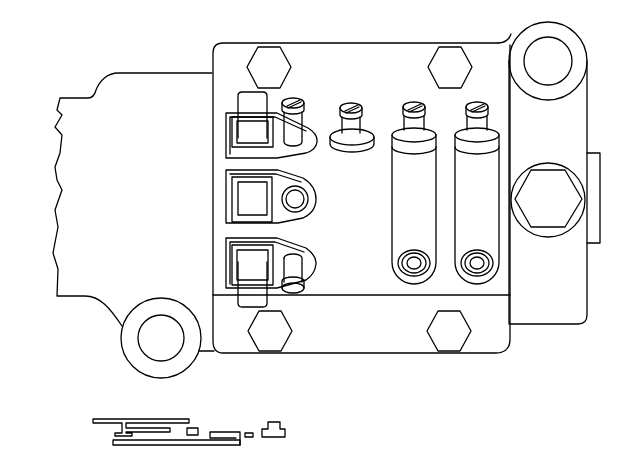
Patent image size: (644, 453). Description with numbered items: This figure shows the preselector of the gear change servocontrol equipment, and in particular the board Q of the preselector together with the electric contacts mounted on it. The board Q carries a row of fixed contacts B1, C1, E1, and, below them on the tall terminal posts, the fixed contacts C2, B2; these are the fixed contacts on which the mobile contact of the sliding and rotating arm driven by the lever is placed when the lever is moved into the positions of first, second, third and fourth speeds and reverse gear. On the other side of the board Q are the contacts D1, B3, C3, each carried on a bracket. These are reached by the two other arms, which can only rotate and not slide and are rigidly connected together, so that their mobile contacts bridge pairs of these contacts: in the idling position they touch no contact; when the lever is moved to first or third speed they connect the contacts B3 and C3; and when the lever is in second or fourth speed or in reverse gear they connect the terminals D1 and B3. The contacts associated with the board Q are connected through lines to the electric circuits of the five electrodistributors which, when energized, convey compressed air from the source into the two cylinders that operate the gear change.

The board Q is at (375, 80).
The contact D1 is at (299, 100).
The fixed contact E1 is at (360, 102).
The fixed contact C1 is at (427, 93).
The fixed contact B1 is at (490, 93).
The contact B3 is at (312, 211).
The contact C3 is at (311, 278).
The fixed contact C2 is at (397, 271).
The fixed contact B2 is at (499, 271).